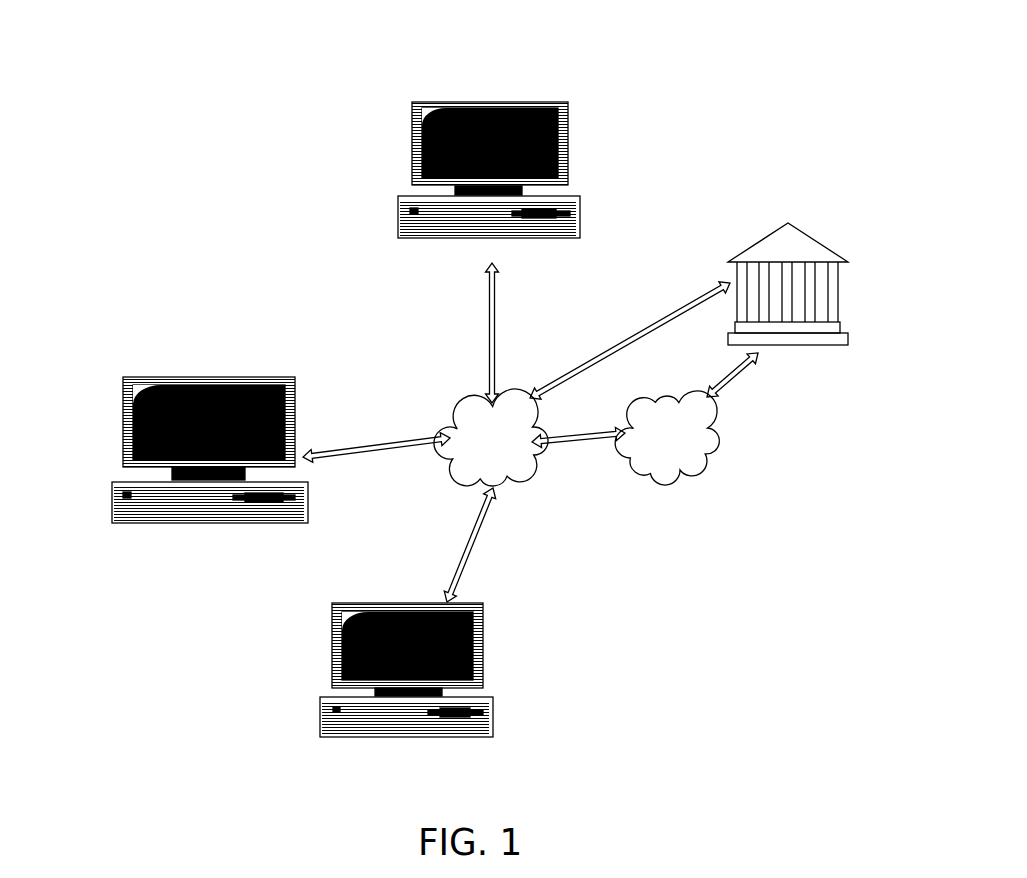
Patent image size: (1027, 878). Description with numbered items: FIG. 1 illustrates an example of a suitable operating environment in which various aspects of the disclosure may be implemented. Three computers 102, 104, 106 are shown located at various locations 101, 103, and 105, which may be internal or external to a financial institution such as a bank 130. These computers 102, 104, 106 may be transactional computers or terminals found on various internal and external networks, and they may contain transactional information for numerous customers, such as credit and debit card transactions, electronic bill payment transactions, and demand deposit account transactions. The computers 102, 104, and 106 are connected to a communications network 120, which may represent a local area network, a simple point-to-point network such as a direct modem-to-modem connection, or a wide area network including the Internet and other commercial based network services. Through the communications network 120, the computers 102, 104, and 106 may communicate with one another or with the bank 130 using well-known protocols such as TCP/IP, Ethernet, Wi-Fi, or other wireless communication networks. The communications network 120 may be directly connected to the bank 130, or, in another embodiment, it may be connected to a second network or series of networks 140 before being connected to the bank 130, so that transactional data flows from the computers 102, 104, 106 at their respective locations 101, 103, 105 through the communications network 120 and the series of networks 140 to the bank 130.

The location 101 is at (488, 100).
The computer 102 is at (400, 255).
The location 103 is at (125, 380).
The computer 104 is at (97, 530).
The location 105 is at (487, 637).
The computer 106 is at (348, 765).
The communications network 120 is at (528, 475).
The bank 130 is at (827, 347).
The series of networks 140 is at (698, 470).